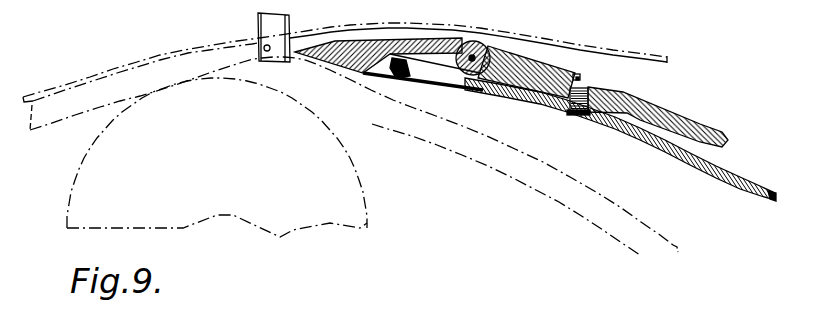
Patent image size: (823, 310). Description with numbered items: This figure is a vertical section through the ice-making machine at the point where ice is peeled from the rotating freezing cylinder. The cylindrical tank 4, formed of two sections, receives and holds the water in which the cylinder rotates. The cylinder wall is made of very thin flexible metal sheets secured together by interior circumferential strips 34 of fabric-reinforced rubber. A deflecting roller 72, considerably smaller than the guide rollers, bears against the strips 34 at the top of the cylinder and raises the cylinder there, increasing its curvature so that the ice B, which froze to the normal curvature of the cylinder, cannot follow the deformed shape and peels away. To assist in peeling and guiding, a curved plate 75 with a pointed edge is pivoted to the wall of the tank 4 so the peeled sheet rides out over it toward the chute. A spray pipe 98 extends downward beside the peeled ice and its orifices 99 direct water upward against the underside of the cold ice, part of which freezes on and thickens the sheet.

The cylindrical tank 4 is at (740, 172).
The interior circumferential strips 34 is at (457, 140).
The deflecting roller 72 is at (343, 168).
The curved plate 75 is at (336, 48).
The spray pipe 98 is at (291, 21).
The orifices 99 is at (265, 50).
The ice B is at (627, 46).